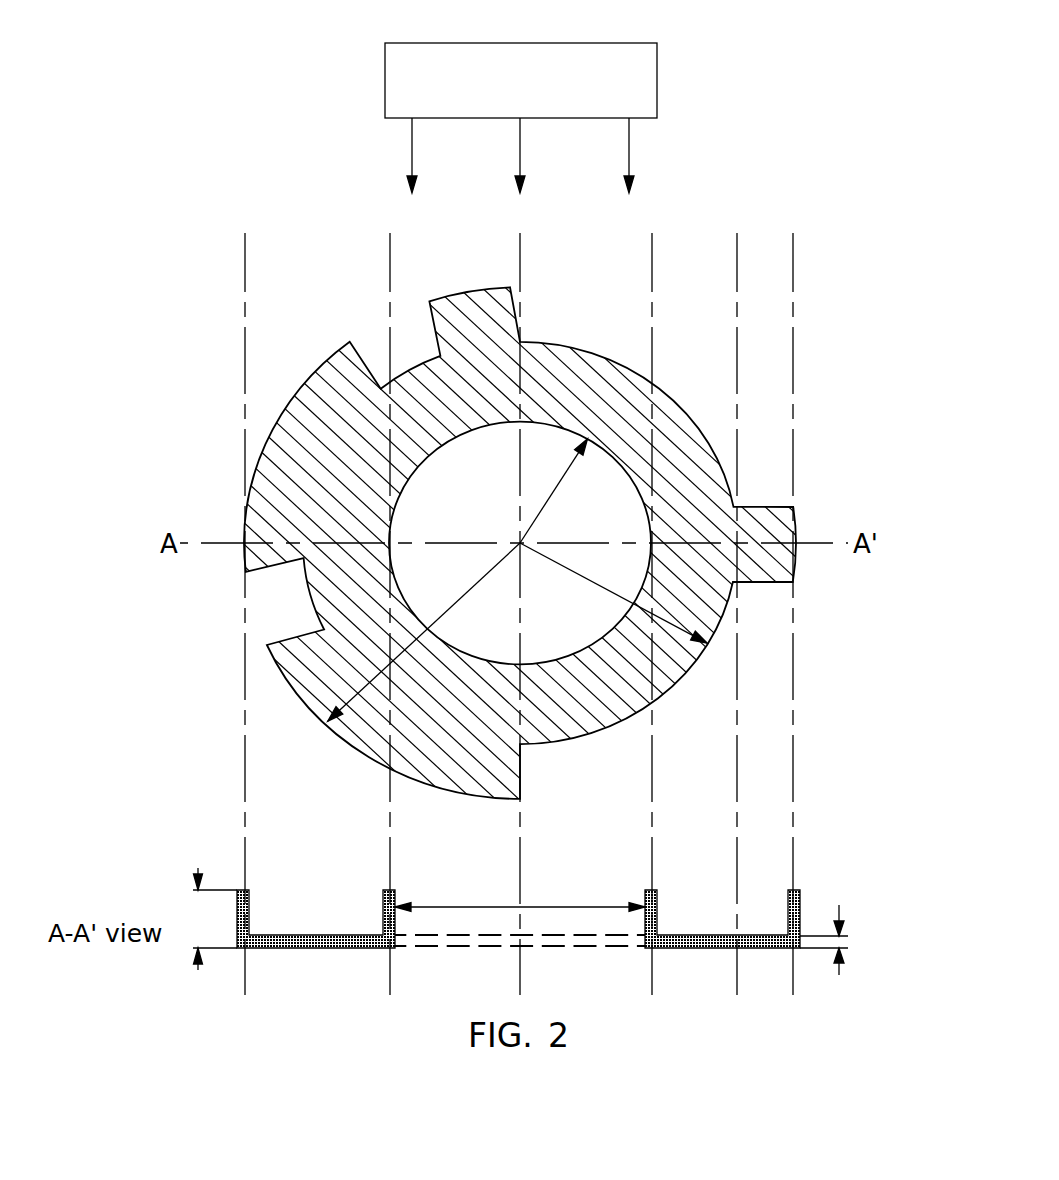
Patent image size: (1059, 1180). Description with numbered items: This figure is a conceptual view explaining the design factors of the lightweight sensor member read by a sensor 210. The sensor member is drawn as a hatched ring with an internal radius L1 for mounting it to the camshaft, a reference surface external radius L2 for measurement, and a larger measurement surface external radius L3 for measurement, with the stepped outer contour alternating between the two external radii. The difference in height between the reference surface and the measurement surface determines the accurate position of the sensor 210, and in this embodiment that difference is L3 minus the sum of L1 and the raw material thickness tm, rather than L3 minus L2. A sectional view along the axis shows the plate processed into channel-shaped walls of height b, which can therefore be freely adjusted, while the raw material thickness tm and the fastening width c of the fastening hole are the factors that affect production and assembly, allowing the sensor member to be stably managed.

The sensor 210 is at (657, 78).
The internal radius L1 is at (554, 491).
The reference surface external radius L2 is at (613, 593).
The measurement surface external radius L3 is at (424, 632).
The height b is at (208, 919).
The fastening width c is at (520, 894).
The raw material thickness tm is at (838, 940).